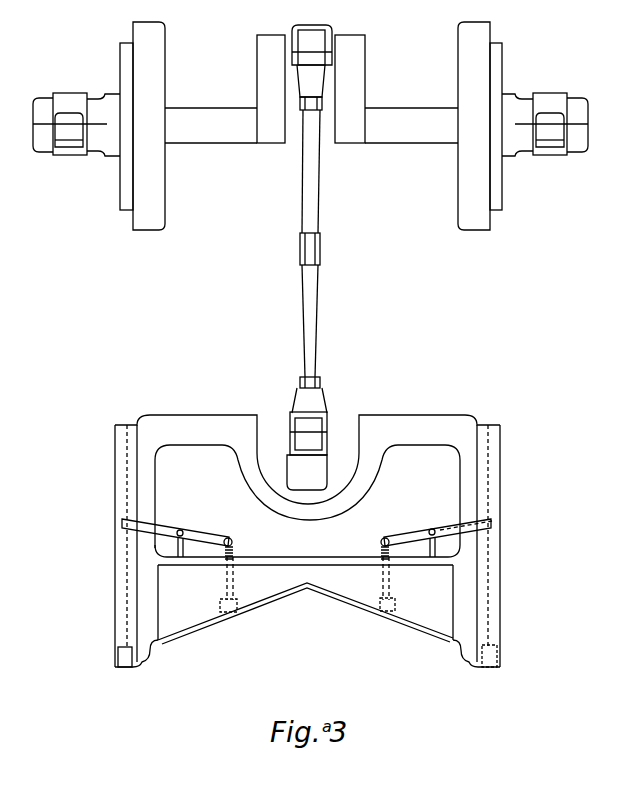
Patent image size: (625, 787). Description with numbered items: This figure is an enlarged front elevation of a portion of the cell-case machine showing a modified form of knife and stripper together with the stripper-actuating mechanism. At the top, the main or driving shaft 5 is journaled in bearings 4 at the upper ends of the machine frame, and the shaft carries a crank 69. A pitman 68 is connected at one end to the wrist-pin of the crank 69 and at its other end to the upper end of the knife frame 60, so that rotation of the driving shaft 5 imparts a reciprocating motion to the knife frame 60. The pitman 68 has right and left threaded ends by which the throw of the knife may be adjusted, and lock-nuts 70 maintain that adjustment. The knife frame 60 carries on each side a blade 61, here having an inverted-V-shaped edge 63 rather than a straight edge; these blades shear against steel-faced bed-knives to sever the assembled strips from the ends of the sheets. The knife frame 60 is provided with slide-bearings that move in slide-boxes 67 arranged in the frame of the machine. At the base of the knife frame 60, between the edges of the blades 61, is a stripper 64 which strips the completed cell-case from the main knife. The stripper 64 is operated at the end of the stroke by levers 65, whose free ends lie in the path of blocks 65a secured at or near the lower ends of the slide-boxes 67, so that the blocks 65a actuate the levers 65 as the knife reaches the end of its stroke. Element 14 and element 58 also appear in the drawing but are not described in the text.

The bearing 4 is at (82, 89).
The wheel 14 is at (311, 126).
The main or driving shaft 5 is at (311, 89).
The crank 69 is at (328, 56).
The lock-nut 70 is at (302, 108).
The pitman 68 is at (316, 300).
The knife frame 60 is at (307, 541).
The slide-box 67 is at (310, 546).
The block 65a is at (118, 652).
The lever 65 is at (307, 531).
The spring 58 is at (236, 583).
The blade 61 is at (313, 578).
The stripper 64 is at (224, 613).
The inverted-V-shaped edge 63 is at (266, 598).